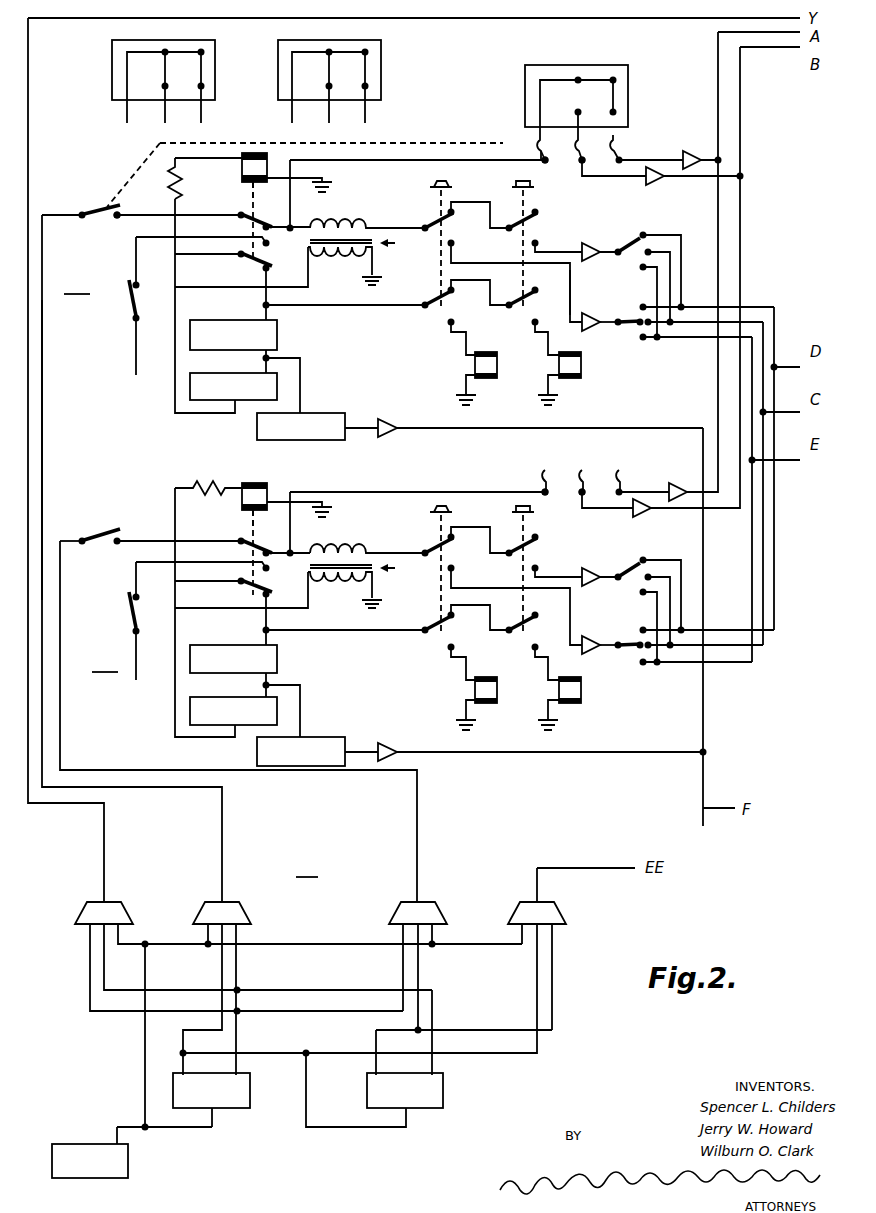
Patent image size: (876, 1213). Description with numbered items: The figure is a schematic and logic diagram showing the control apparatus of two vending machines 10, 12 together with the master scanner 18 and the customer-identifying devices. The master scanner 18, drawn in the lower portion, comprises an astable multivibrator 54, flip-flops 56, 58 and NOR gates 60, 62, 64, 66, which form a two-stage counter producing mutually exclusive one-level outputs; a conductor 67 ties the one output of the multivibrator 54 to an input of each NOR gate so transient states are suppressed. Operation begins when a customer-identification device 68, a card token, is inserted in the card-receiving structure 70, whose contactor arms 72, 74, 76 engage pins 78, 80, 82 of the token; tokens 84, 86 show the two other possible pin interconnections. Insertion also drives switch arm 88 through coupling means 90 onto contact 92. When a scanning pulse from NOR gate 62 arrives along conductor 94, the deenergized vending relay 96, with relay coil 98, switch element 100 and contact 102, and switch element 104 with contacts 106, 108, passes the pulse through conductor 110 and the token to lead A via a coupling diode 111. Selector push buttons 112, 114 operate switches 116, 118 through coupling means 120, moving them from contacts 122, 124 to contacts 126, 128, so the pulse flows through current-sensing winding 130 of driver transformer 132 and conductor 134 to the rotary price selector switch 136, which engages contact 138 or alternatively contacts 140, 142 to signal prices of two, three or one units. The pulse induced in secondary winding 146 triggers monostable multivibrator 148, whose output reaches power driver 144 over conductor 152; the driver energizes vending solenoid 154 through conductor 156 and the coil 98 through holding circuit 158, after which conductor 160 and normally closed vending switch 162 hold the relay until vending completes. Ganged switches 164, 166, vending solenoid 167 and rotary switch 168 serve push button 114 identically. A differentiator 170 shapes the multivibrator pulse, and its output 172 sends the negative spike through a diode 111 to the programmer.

The vending machine 10 is at (77, 285).
The vending machine 12 is at (105, 663).
The master scanner 18 is at (307, 868).
The astable multivibrator 54 is at (128, 1165).
The flip-flop 56 is at (250, 1096).
The flip-flop 58 is at (443, 1096).
The NOR gate 60 is at (80, 916).
The NOR gate 62 is at (200, 916).
The NOR gate 64 is at (394, 916).
The NOR gate 66 is at (514, 912).
The conductor 67 is at (302, 945).
The customer-identification device 68 is at (628, 72).
The card-receiving structure 70 is at (627, 150).
The contactor arm 72 is at (549, 163).
The contactor arm 74 is at (589, 472).
The contactor arm 76 is at (623, 140).
The pin 78 is at (537, 139).
The pin 80 is at (578, 130).
The pin 82 is at (611, 124).
The token 84 is at (381, 65).
The token 86 is at (215, 62).
The switch arm 88 is at (97, 209).
The coupling means 90 is at (382, 143).
The contact 92 is at (114, 220).
The conductor 94 is at (43, 441).
The vending relay 96 is at (251, 188).
The relay coil 98 is at (250, 150).
The switch element 100 is at (240, 212).
The contact 102 is at (262, 229).
The switch element 104 is at (240, 258).
The contact 106 is at (269, 244).
The contact 108 is at (264, 270).
The conductor 110 is at (362, 165).
The coupling diode 111 is at (692, 150).
The selector push button 112 is at (448, 184).
The selector push button 114 is at (514, 184).
The single-pole double-throw switch 116 is at (454, 222).
The single-pole double-throw switch 118 is at (458, 296).
The coupling means 120 is at (437, 262).
The contact 122 is at (438, 203).
The contact 124 is at (435, 300).
The contact 126 is at (457, 246).
The contact 128 is at (447, 322).
The current-sensing winding 130 is at (328, 224).
The driver transformer 132 is at (396, 244).
The conductor 134 is at (573, 283).
The rotary price selector switch 136 is at (630, 331).
The contact 138 is at (641, 342).
The contact 140 is at (641, 308).
The contact 142 is at (647, 328).
The power driver 144 is at (278, 334).
The secondary winding 146 is at (278, 429).
The monostable multivibrator 148 is at (248, 405).
The conductor 152 is at (264, 359).
The vending solenoid 154 is at (492, 380).
The conductor 156 is at (340, 307).
The holding circuit 158 is at (174, 203).
The conductor 160 is at (140, 283).
The vending switch 162 is at (128, 312).
The ganged switch 164 is at (546, 216).
The ganged switch 166 is at (521, 312).
The vending solenoid 167 is at (582, 382).
The rotary switch 168 is at (637, 238).
The differentiator 170 is at (330, 412).
The output 172 is at (362, 440).